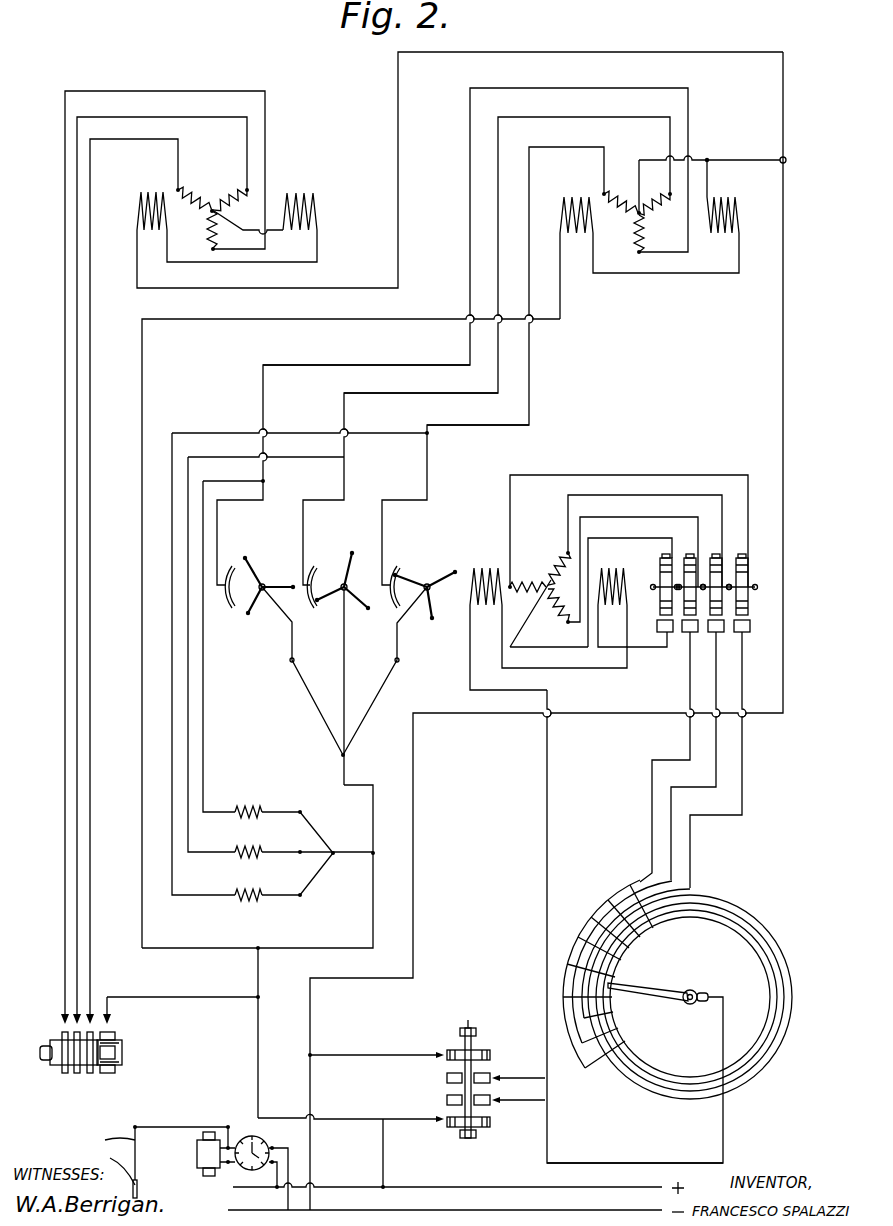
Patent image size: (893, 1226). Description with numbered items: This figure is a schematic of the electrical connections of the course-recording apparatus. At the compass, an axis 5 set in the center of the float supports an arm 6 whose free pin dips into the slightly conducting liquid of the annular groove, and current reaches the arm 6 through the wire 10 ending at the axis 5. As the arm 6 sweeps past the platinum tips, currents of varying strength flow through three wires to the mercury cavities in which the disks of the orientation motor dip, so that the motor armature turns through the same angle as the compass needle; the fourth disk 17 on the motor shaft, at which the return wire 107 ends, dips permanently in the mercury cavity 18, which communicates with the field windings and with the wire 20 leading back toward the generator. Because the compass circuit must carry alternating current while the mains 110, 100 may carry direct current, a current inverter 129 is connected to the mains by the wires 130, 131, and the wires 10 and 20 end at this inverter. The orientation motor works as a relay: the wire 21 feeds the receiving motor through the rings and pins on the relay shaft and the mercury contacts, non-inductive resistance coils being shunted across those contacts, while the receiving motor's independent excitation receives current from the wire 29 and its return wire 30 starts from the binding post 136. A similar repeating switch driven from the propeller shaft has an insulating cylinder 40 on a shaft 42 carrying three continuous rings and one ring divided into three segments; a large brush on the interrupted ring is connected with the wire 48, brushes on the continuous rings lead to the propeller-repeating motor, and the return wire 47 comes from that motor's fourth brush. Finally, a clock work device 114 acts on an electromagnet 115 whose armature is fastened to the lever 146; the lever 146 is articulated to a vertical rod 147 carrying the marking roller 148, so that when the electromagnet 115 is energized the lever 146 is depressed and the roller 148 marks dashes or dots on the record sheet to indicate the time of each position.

The return wire 47 is at (346, 289).
The return wire 30 is at (778, 367).
The wire 29 is at (237, 318).
The binding post 136 is at (710, 158).
The wire 21 is at (352, 789).
The wire 48 is at (193, 997).
The wire 20 is at (545, 843).
The wire 10 is at (612, 1163).
The return wire 107 is at (620, 535).
The fourth disk 17 is at (660, 563).
The mercury cavity 18 is at (667, 635).
The axis 5 is at (696, 992).
The arm 6 is at (673, 992).
The current inverter 129 is at (478, 1044).
The wire 131 is at (375, 1050).
The wire 130 is at (400, 1119).
The main 110 is at (468, 1187).
The negative main 100 is at (470, 1213).
The shaft 42 is at (43, 1042).
The insulating cylinder 40 is at (122, 1057).
The lever 146 is at (170, 1127).
The vertical rod 147 is at (106, 1141).
The marking roller 148 is at (108, 1172).
The electromagnet 115 is at (197, 1155).
The clock work device 114 is at (268, 1146).